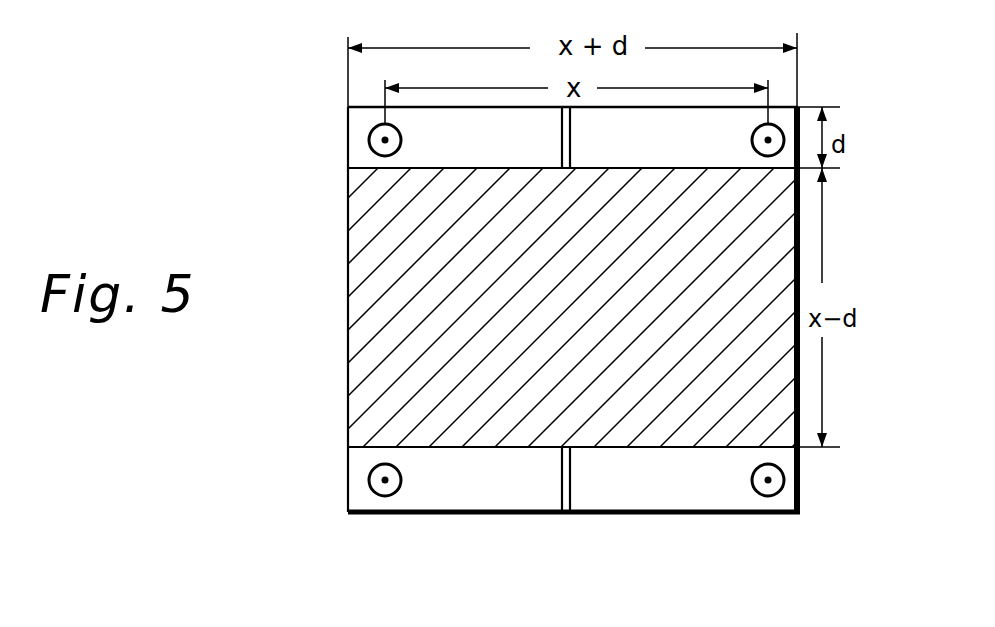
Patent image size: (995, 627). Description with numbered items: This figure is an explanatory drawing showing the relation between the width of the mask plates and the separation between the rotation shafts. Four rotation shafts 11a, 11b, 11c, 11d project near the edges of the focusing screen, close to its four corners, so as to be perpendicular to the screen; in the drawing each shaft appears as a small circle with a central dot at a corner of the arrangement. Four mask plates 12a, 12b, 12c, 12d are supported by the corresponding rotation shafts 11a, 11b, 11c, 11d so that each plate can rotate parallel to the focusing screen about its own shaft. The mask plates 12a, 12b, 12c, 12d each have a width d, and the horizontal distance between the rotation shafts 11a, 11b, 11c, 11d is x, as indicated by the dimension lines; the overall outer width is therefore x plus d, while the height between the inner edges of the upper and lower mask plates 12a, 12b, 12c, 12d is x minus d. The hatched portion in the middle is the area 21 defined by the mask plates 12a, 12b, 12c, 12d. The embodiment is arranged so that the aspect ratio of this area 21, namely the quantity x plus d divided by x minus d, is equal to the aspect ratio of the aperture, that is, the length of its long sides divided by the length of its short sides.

The rotation shaft 11a is at (385, 140).
The rotation shaft 11b is at (768, 140).
The rotation shaft 11c is at (768, 480).
The rotation shaft 11d is at (385, 480).
The mask plate 12a is at (467, 128).
The mask plate 12b is at (700, 122).
The mask plate 12c is at (682, 490).
The mask plate 12d is at (460, 492).
The area 21 is at (375, 330).